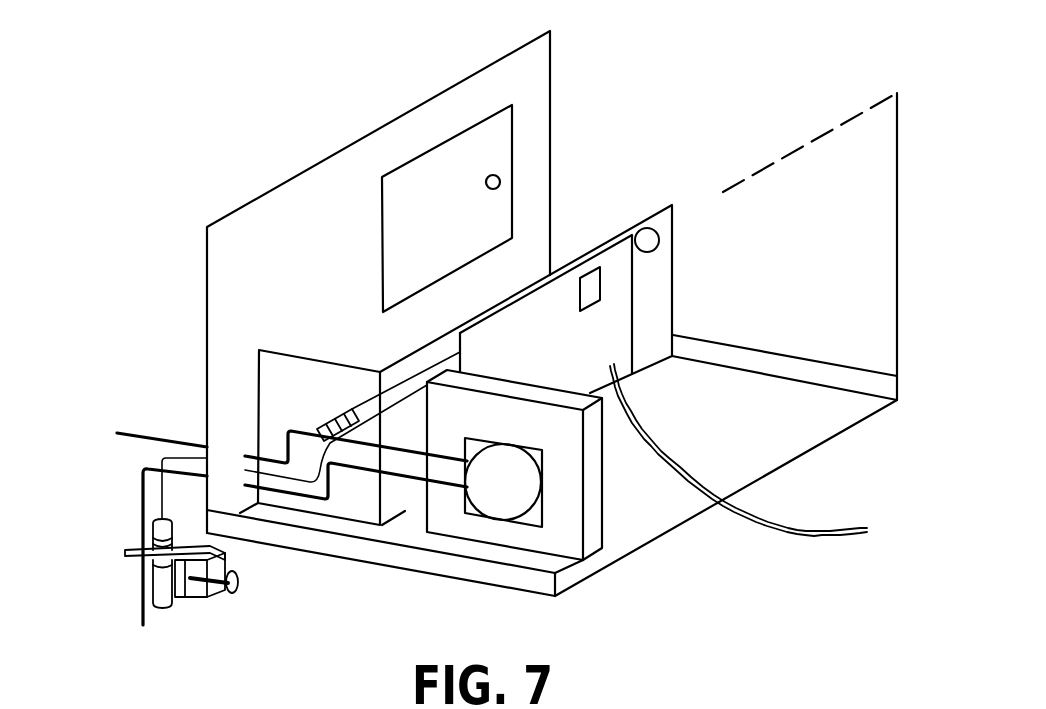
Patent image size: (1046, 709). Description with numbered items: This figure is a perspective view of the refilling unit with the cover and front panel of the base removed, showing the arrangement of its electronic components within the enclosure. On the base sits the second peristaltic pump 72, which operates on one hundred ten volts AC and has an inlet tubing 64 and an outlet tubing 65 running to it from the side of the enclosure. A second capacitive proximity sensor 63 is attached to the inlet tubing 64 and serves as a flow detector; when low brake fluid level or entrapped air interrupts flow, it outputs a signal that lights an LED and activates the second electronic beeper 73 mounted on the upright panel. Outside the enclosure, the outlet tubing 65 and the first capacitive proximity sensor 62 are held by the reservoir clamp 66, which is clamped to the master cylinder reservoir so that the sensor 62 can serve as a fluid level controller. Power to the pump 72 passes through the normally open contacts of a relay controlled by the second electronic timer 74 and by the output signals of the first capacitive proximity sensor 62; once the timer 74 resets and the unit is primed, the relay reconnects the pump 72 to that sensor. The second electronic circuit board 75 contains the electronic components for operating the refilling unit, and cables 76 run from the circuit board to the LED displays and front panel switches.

The first capacitive proximity sensor 62 is at (168, 614).
The second capacitive proximity sensor 63 is at (318, 417).
The inlet tubing 64 is at (118, 428).
The outlet tubing 65 is at (141, 498).
The reservoir clamp 66 is at (227, 562).
The second peristaltic pump 72 is at (608, 537).
The second electronic beeper 73 is at (652, 226).
The second electronic timer 74 is at (610, 273).
The second electronic circuit board 75 is at (608, 323).
The cables from circuit board to LED displays and front panel switches 76 is at (850, 545).